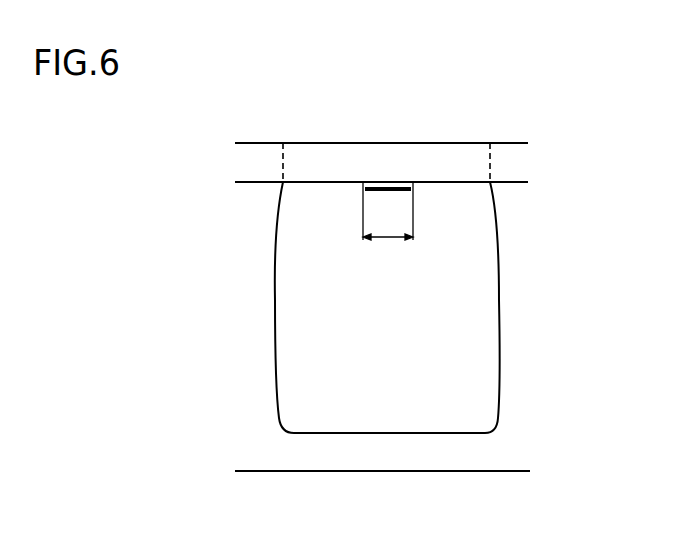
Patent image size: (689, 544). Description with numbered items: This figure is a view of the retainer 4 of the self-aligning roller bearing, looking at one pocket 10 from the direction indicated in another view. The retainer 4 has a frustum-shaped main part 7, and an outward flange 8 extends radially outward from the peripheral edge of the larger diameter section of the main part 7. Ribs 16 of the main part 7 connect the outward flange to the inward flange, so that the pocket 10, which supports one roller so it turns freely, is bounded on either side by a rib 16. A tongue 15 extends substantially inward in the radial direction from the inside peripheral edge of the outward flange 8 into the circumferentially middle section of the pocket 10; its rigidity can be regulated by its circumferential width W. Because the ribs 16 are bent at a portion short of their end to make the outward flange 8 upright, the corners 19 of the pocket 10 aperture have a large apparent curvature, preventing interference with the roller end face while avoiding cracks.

The outward flange 8 is at (452, 160).
The corners 19 is at (285, 186).
The tongue 15 is at (413, 186).
The ribs 16 is at (262, 340).
The pocket 10 is at (348, 425).
The main part 7 is at (415, 466).
The retainer 4 is at (491, 466).